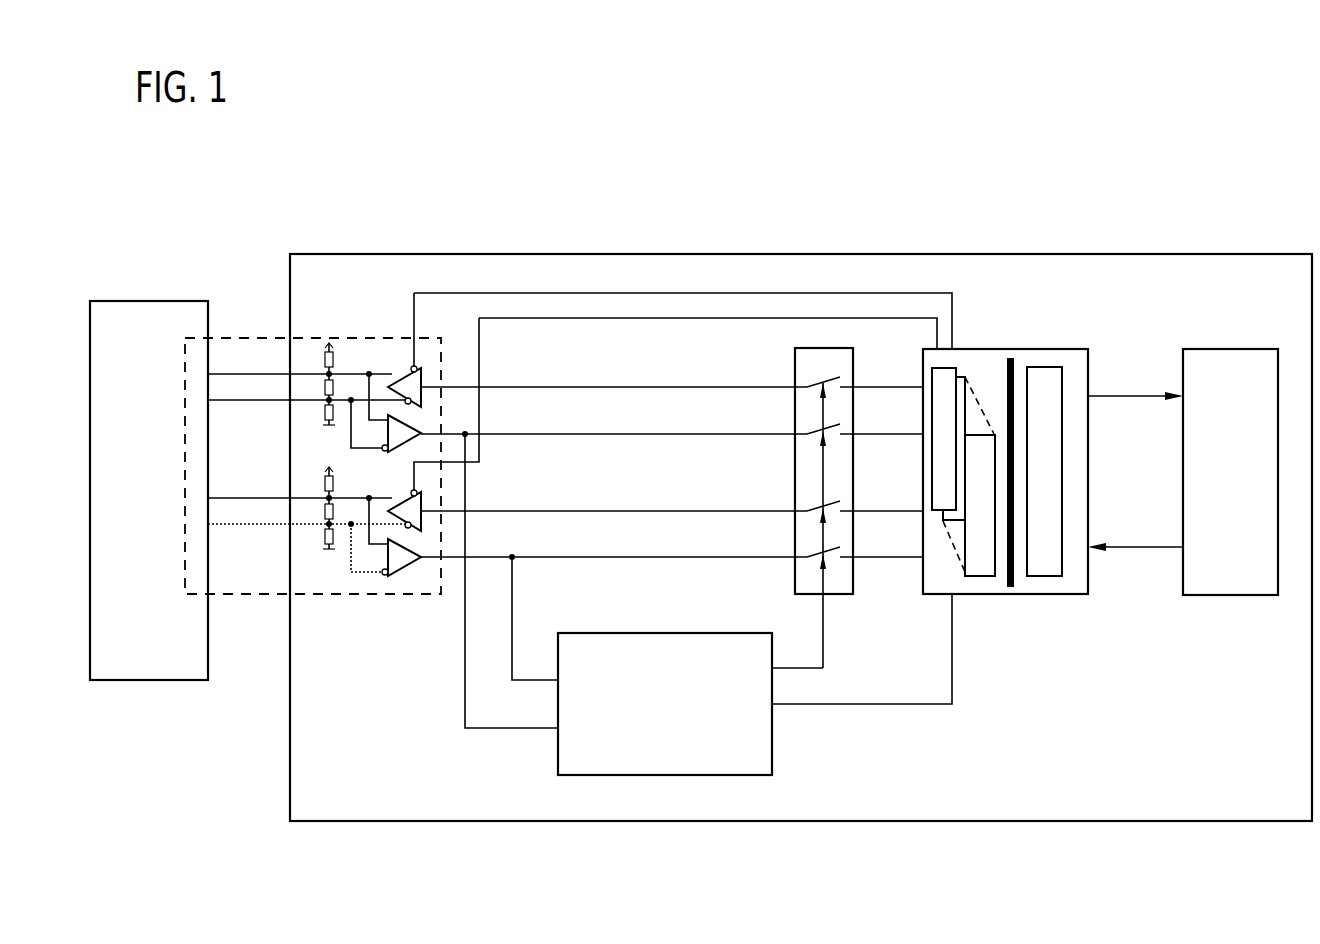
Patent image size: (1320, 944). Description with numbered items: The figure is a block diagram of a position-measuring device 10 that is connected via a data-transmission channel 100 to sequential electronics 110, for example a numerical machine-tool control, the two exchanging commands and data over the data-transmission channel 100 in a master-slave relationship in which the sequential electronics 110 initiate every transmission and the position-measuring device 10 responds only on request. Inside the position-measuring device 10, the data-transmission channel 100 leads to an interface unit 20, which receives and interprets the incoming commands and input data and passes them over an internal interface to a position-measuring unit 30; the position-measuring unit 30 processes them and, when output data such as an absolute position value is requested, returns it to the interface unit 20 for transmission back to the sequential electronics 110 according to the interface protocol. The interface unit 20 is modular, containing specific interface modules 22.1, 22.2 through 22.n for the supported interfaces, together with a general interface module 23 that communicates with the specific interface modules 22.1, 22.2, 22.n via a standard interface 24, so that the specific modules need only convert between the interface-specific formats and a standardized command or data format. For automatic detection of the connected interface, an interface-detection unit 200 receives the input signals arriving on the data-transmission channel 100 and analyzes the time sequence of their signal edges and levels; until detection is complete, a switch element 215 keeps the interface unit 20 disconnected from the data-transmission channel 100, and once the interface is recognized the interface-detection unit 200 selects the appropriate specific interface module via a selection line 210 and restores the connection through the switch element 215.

The position-measuring device 10 is at (833, 267).
The sequential electronics 110 is at (165, 320).
The data-transmission channel 100 is at (260, 347).
The switch element 215 is at (805, 363).
The interface unit 20 is at (1003, 466).
The specific interface module 22.1 is at (943, 378).
The specific interface module 22.2 is at (945, 523).
The specific interface module 22.n is at (985, 567).
The standard interface 24 is at (1020, 358).
The general interface module 23 is at (1052, 383).
The position-measuring unit 30 is at (1223, 372).
The interface-detection unit 200 is at (677, 752).
The selection line 210 is at (883, 706).